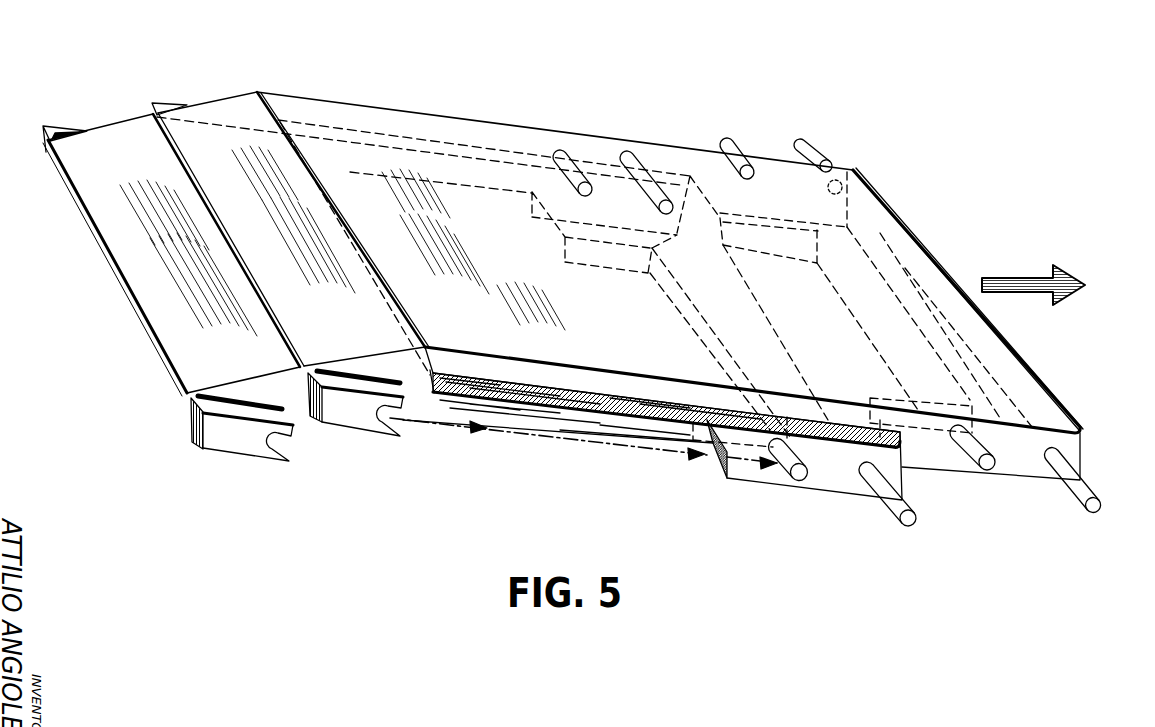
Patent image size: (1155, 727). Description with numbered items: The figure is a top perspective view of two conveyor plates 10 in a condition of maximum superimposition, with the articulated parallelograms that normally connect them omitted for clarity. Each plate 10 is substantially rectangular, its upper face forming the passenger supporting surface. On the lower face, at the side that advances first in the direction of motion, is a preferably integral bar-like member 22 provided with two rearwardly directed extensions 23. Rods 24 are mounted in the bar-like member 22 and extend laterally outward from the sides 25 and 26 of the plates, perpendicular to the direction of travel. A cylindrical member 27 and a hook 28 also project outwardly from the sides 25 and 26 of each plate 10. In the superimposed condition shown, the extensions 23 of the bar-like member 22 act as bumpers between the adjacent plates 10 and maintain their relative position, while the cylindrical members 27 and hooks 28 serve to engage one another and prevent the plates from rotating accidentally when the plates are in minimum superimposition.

The plate 10 is at (426, 128).
The bar-like member 22 is at (673, 302).
The extensions 23 is at (553, 235).
The rods 24 is at (801, 143).
The side 25 is at (462, 126).
The side 26 is at (583, 380).
The cylindrical member 27 is at (727, 145).
The hook 28 is at (160, 102).